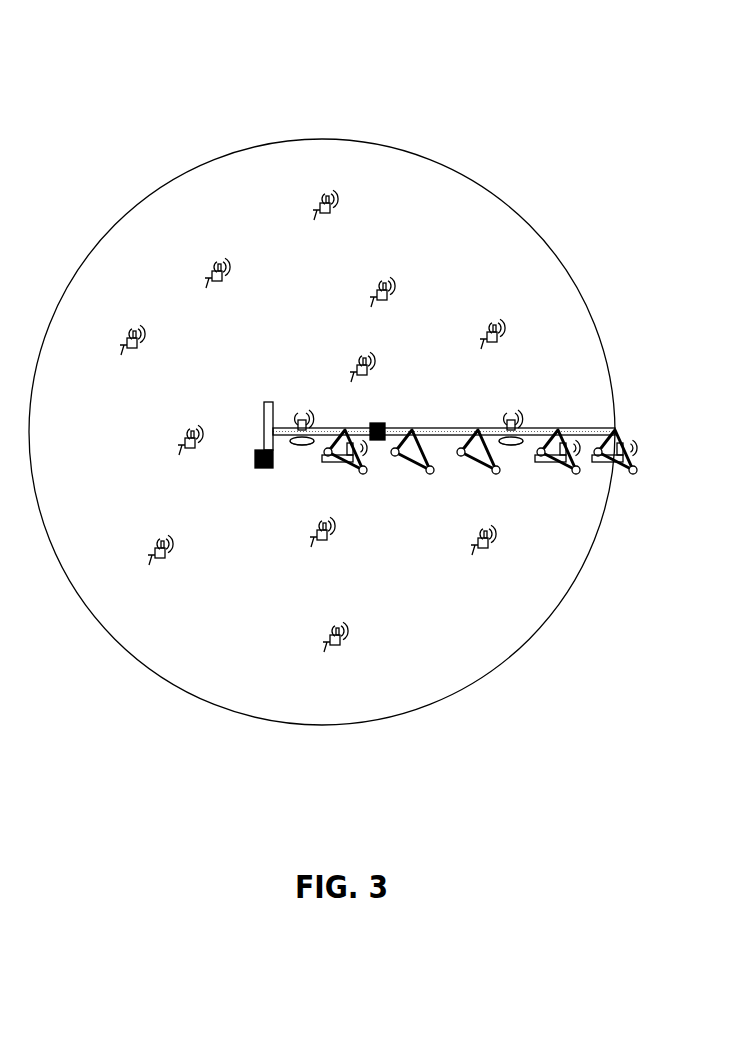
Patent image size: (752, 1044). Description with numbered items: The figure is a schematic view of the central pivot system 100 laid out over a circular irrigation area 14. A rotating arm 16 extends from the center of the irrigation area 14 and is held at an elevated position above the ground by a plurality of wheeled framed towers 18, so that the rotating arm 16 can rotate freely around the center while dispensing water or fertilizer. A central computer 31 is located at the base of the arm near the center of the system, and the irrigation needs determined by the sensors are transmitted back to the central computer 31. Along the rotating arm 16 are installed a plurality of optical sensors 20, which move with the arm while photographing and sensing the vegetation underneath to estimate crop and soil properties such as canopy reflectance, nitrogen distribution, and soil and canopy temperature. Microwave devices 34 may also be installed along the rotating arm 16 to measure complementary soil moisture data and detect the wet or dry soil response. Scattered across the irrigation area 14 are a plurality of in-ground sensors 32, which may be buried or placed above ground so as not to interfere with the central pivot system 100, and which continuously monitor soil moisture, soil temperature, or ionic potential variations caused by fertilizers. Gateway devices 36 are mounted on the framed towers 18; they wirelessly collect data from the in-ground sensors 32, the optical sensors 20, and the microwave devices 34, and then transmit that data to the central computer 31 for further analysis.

The central pivot system 100 is at (325, 51).
The irrigation area 14 is at (250, 226).
The rotating arm 16 is at (437, 428).
The framed towers 18 is at (543, 475).
The optical sensors 20 is at (305, 402).
The central computer 31 is at (253, 462).
The in-ground sensors 32 is at (342, 217).
The microwave devices 34 is at (383, 421).
The gateway devices 36 is at (327, 464).